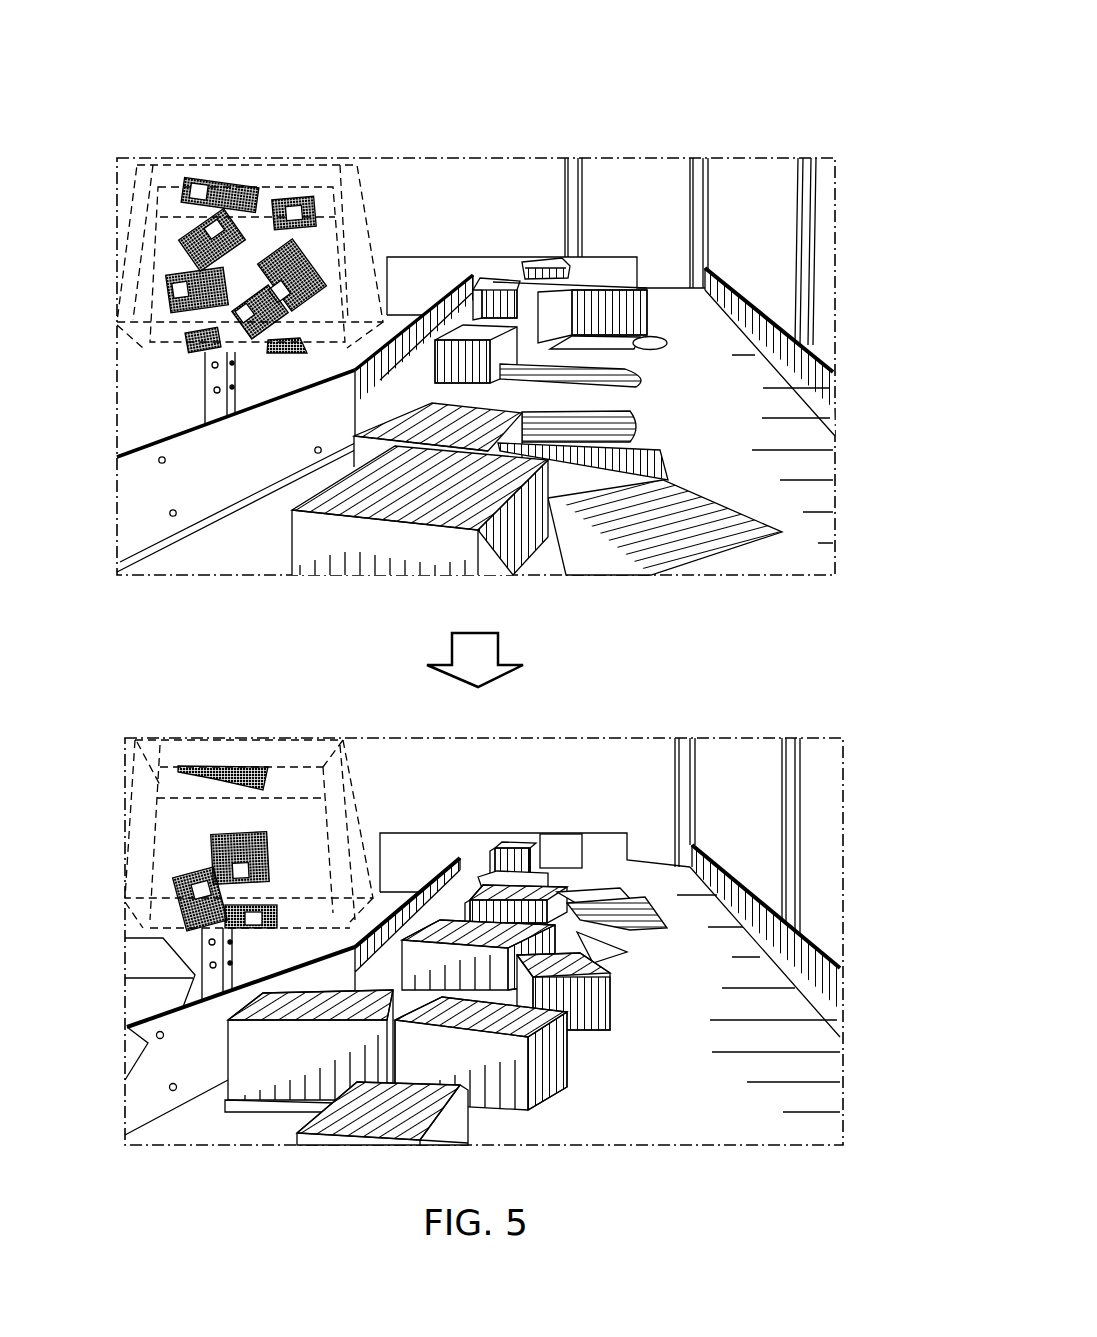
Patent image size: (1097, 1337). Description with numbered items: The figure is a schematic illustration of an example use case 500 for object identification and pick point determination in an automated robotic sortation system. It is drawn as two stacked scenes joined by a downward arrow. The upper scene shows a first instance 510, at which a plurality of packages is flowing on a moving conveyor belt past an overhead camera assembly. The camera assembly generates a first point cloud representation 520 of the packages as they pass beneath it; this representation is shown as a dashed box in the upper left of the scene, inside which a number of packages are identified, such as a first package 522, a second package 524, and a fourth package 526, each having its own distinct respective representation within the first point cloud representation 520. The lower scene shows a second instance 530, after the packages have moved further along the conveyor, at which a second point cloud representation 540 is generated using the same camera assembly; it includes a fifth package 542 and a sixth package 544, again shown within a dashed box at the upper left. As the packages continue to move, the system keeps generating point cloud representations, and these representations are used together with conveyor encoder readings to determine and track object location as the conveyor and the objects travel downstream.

The use case 500 is at (860, 50).
The first instance 510 is at (877, 152).
The first point cloud representation 520 is at (232, 138).
The first package 522 is at (167, 303).
The second package 524 is at (180, 237).
The fourth package 526 is at (297, 198).
The second instance 530 is at (872, 731).
The second point cloud representation 540 is at (230, 718).
The fifth package 542 is at (187, 767).
The sixth package 544 is at (212, 852).